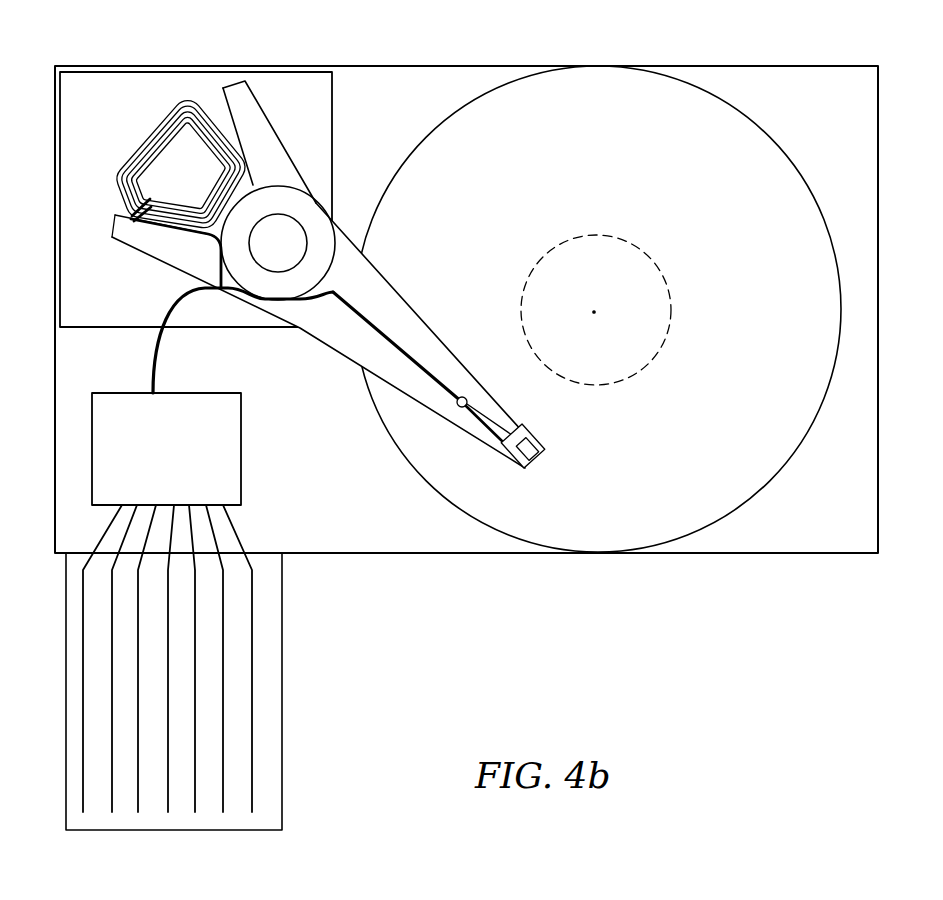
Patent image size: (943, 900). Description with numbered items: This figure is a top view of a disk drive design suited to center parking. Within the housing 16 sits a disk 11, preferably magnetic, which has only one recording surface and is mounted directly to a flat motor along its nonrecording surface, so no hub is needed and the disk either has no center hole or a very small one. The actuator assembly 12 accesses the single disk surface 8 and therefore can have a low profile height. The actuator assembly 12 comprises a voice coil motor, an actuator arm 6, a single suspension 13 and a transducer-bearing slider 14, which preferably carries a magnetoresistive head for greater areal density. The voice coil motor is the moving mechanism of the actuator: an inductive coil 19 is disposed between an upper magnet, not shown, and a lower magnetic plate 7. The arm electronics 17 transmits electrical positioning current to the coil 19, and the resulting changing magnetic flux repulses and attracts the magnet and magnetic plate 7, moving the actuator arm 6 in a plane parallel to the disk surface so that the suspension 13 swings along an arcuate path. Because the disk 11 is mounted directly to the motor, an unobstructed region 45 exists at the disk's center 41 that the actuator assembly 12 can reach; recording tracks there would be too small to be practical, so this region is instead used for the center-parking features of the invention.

The housing 16 is at (821, 66).
The disk 11 is at (598, 309).
The single disk surface 8 is at (650, 184).
The disk center 41 is at (582, 298).
The unobstructed region 45 is at (633, 310).
The actuator assembly 12 is at (336, 274).
The actuator arm 6 is at (272, 135).
The suspension 13 is at (419, 327).
The transducer-bearing slider 14 is at (524, 433).
The lower magnetic plate 7 is at (83, 270).
The inductive coil 19 is at (156, 128).
The arm electronics 17 is at (242, 458).